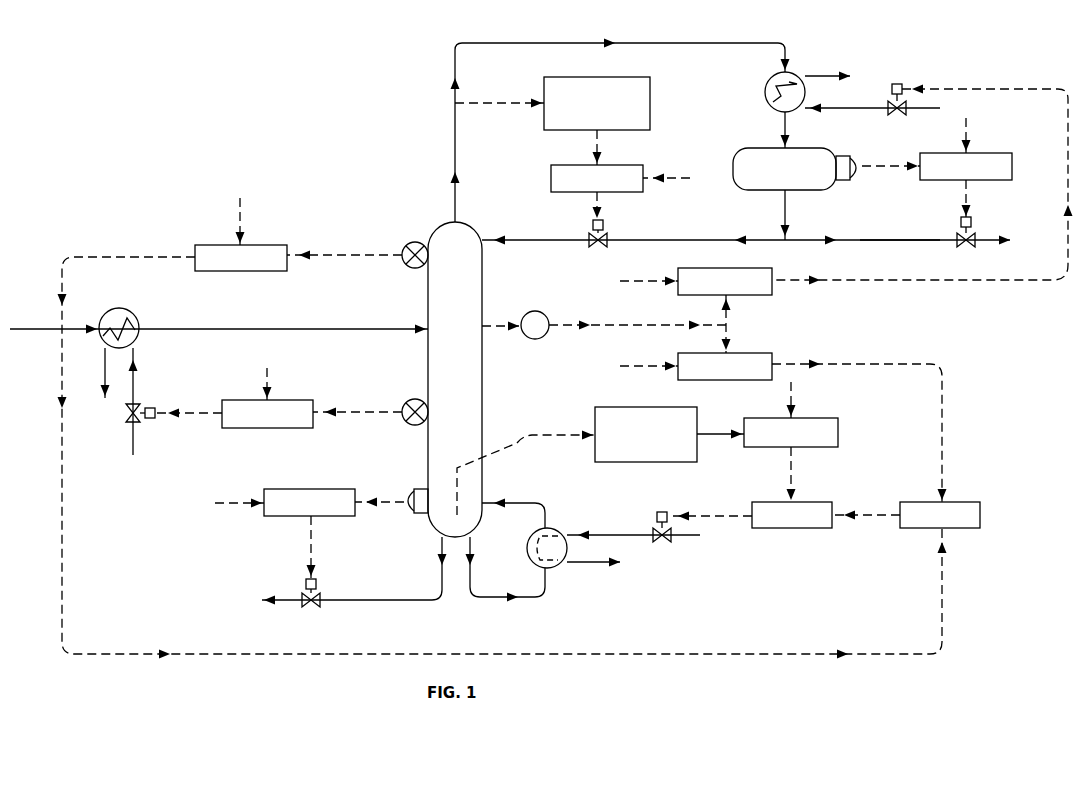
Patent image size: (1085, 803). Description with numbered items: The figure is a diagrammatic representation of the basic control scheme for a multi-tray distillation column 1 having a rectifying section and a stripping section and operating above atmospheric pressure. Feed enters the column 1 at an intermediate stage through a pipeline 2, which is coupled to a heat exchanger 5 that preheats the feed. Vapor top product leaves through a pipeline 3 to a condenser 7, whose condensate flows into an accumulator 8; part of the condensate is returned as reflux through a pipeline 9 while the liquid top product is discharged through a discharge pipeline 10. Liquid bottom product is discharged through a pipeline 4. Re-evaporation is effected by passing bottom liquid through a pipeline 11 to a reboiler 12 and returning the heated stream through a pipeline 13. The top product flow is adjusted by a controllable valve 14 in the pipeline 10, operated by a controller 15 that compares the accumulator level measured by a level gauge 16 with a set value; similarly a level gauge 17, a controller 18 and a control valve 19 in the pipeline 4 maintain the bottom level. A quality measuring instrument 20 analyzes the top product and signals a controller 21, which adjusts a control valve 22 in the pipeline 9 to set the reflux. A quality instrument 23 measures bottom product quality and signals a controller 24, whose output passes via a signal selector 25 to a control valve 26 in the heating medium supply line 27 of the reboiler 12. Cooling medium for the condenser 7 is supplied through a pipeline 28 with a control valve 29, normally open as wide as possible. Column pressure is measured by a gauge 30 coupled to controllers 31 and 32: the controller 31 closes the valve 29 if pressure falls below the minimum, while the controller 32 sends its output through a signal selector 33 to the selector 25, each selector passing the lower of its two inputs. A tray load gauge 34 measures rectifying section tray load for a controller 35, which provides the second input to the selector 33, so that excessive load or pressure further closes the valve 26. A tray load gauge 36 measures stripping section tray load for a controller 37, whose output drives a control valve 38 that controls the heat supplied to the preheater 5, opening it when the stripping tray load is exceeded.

The distillation column 1 is at (460, 392).
The feed pipeline 2 is at (338, 329).
The top product discharge pipeline 3 is at (505, 43).
The bottom product pipeline 4 is at (360, 600).
The heat exchanger 5 is at (104, 316).
The condenser 7 is at (766, 92).
The accumulator 8 is at (764, 148).
The reflux pipeline 9 is at (758, 240).
The discharge pipeline 10 is at (893, 240).
The bottom liquid pipeline 11 is at (486, 597).
The reboiler 12 is at (534, 534).
The return pipeline 13 is at (515, 503).
The controllable valve 14 is at (966, 250).
The controller 15 is at (980, 153).
The level gauge 16 is at (860, 172).
The level gauge 17 is at (408, 506).
The controller 18 is at (322, 489).
The control valve 19 is at (312, 607).
The quality measuring instrument 20 is at (652, 103).
The controller 21 is at (551, 178).
The control valve 22 is at (604, 236).
The quality instrument 23 is at (653, 462).
The controller 24 is at (806, 418).
The signal selector 25 is at (808, 528).
The control valve 26 is at (662, 542).
The heating medium supply line 27 is at (590, 535).
The cooling medium pipeline 28 is at (838, 108).
The control valve 29 is at (898, 118).
The pressure gauge 30 is at (532, 338).
The controller 31 is at (754, 295).
The controller 32 is at (748, 353).
The signal selector 33 is at (952, 502).
The tray load gauge 34 is at (408, 244).
The controller 35 is at (240, 272).
The tray load gauge 36 is at (412, 424).
The controller 37 is at (278, 428).
The control valve 38 is at (126, 418).